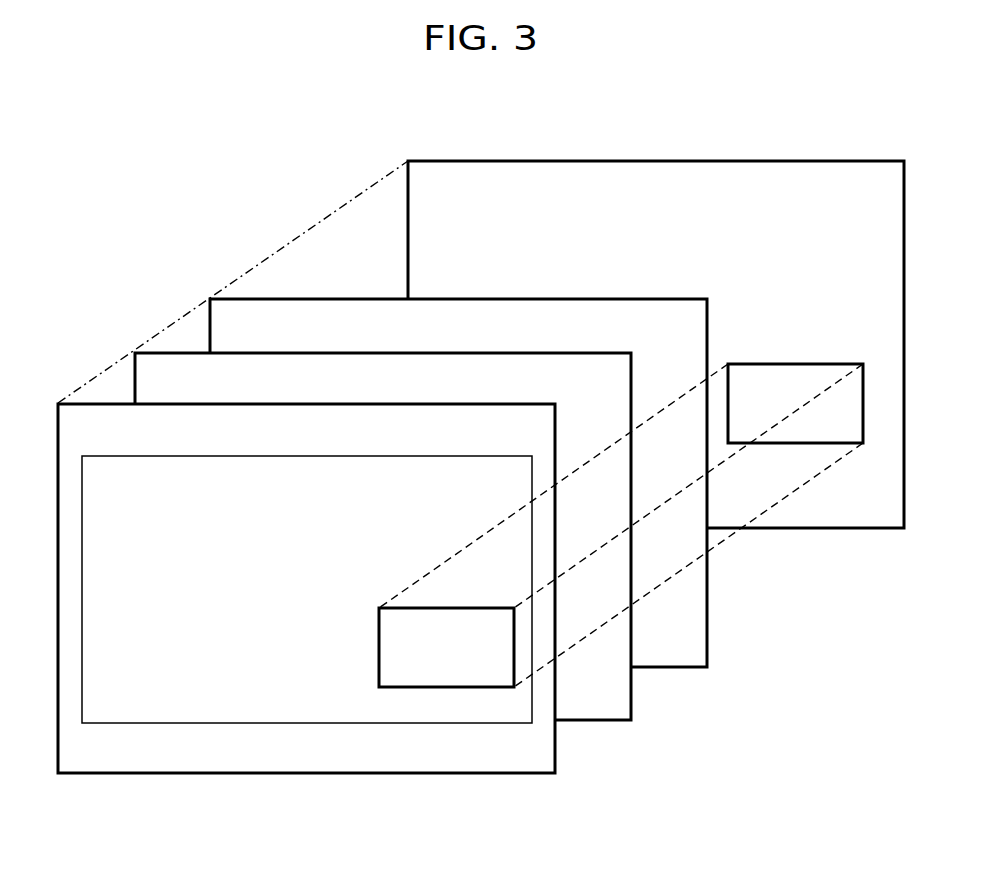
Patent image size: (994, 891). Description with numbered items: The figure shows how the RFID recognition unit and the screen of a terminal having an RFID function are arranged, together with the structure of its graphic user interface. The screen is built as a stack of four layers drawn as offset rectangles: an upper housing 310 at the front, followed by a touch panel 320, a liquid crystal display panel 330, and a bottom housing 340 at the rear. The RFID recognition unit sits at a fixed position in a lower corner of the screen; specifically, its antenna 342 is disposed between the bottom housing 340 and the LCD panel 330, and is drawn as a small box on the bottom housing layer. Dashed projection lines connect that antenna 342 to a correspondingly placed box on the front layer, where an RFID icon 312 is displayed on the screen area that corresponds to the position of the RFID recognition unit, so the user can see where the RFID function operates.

The upper housing 310 is at (306, 588).
The RFID icon 312 is at (448, 607).
The touch panel 320 is at (383, 536).
The LCD panel 330 is at (458, 483).
The bottom housing 340 is at (656, 344).
The antenna 342 is at (797, 363).